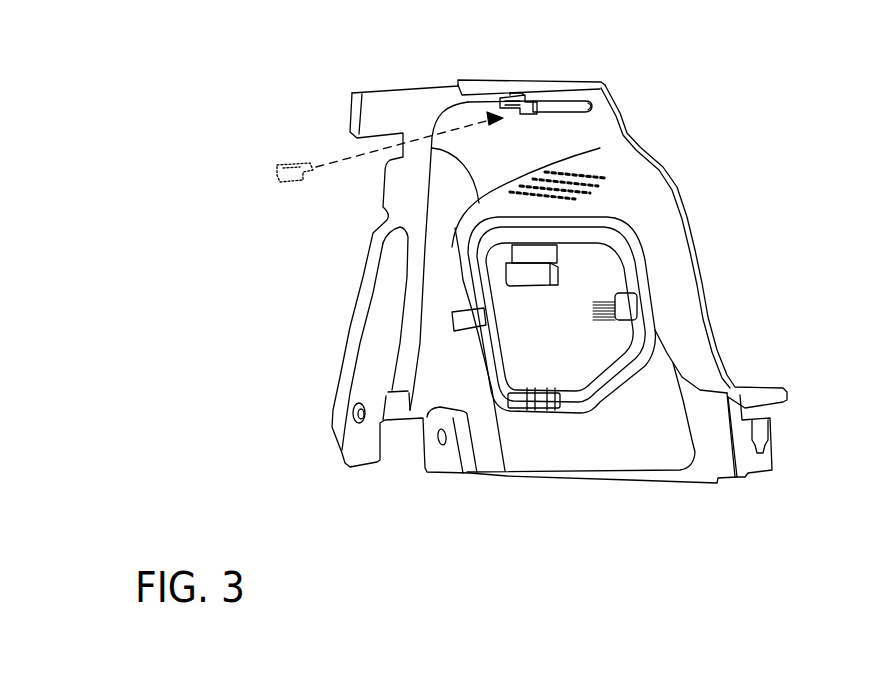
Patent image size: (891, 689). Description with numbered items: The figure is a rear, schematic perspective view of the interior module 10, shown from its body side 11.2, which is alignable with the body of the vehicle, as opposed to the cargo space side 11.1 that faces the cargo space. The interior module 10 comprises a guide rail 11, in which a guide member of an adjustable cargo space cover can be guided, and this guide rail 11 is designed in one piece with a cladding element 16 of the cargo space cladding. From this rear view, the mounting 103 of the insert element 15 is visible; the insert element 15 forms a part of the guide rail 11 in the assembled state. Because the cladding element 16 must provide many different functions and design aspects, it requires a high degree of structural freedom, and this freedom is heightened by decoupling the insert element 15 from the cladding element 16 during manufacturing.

The interior module 10 is at (728, 106).
The guide rail 11 is at (560, 106).
The cargo space side 11.1 is at (760, 300).
The body side 11.2 is at (312, 481).
The insert element 15 is at (518, 99).
The cladding element 16 is at (642, 425).
The mounting 103 is at (349, 158).